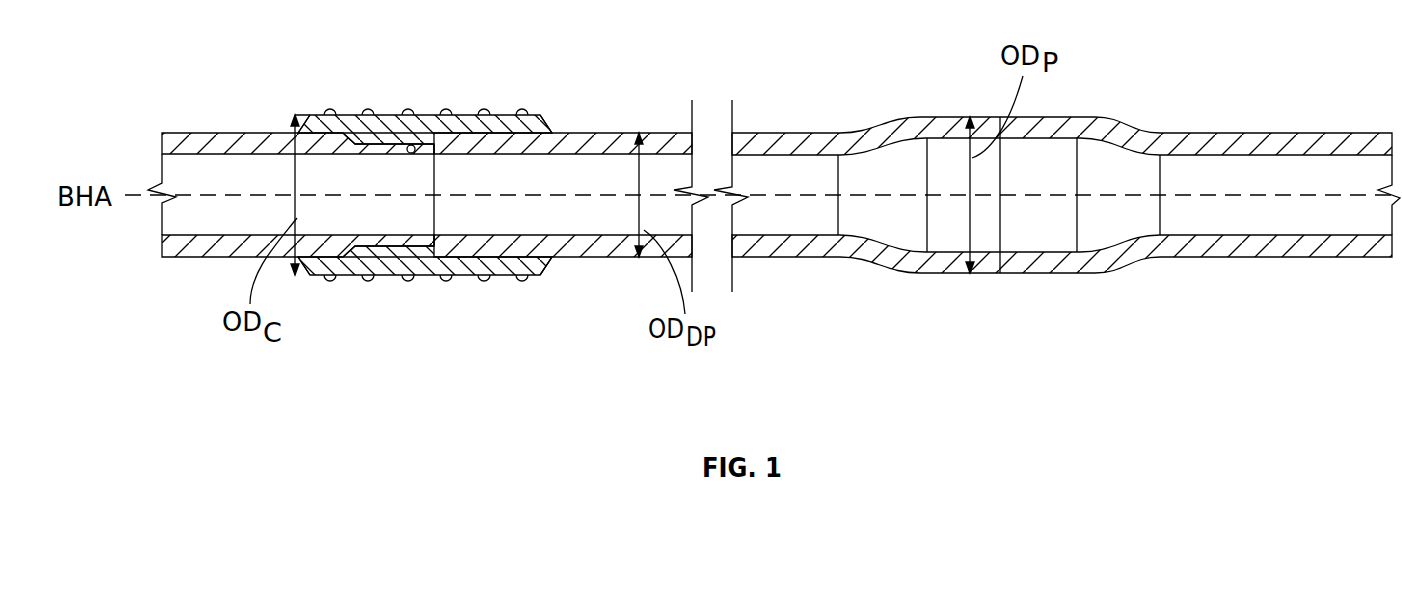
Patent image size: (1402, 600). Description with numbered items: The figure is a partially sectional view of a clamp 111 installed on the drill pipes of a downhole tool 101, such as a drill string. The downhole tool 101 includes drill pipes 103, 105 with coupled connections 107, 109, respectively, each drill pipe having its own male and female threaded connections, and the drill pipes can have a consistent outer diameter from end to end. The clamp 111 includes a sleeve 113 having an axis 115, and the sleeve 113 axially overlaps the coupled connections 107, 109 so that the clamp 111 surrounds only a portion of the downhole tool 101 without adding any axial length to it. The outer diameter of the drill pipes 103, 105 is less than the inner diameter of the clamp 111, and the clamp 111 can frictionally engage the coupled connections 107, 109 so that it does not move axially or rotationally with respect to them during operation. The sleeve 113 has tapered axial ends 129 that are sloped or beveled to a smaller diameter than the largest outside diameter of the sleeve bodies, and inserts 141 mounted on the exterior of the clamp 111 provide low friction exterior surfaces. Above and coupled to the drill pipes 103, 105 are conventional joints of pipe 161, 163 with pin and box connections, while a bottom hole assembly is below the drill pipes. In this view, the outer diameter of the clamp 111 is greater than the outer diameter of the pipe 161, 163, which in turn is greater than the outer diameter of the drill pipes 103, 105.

The downhole tool 101 is at (741, 278).
The drill pipe 103 is at (188, 132).
The drill pipe 105 is at (609, 133).
The coupled connection 107 is at (390, 143).
The coupled connection 109 is at (407, 146).
The clamp 111 is at (418, 304).
The sleeve 113 is at (544, 261).
The axis 115 is at (252, 197).
The tapered axial ends 129 is at (297, 113).
The inserts 141 is at (485, 112).
The joint of pipe 161 is at (932, 117).
The joint of pipe 163 is at (1060, 276).